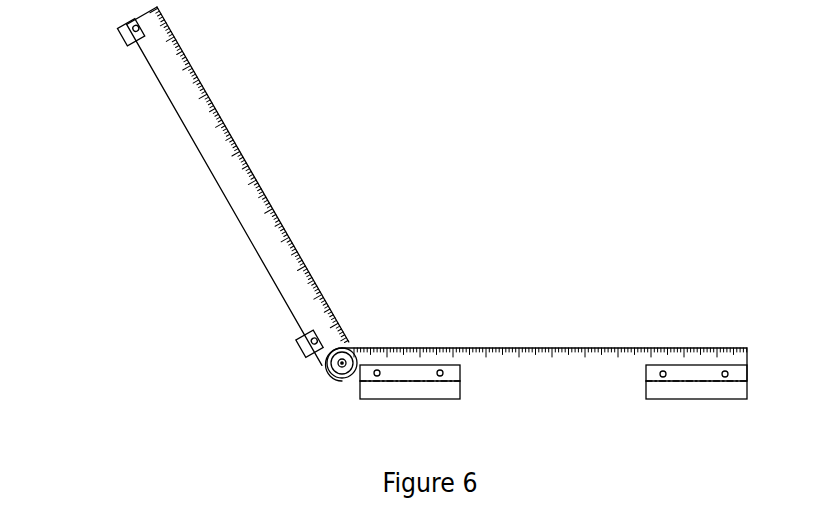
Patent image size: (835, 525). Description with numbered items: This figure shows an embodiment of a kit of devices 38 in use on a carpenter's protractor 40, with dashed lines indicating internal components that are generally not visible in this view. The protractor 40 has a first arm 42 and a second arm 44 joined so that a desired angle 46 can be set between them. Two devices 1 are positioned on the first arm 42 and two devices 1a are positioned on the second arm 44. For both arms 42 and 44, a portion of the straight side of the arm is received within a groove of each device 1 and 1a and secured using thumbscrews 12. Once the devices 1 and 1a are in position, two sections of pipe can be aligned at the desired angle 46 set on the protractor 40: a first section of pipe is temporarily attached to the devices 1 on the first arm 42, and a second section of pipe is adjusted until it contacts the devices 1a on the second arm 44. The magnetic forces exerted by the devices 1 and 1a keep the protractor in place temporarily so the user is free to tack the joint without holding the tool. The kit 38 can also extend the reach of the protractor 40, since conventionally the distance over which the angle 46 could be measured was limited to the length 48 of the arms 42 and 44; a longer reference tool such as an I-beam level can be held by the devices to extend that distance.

The kit of devices 38 is at (483, 202).
The second arm 44 is at (207, 128).
The first arm 42 is at (515, 370).
The carpenter's protractor 40 is at (268, 237).
The length 48 is at (197, 75).
The angle 46 is at (353, 317).
The device 1 is at (403, 378).
The device 1a is at (130, 40).
The thumbscrew 12 is at (123, 29).